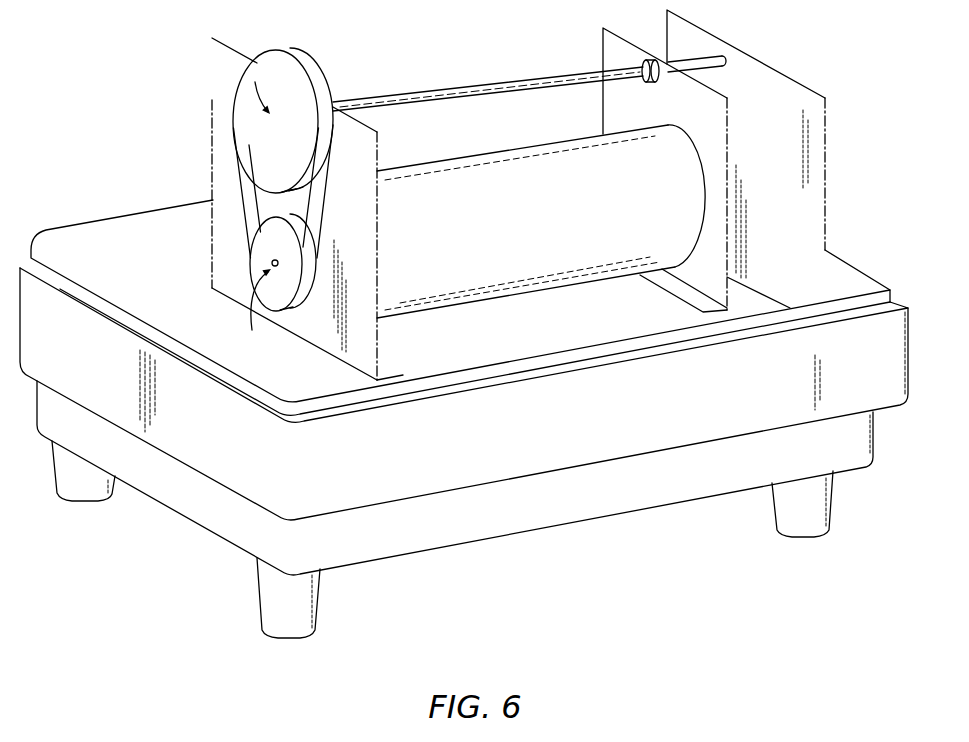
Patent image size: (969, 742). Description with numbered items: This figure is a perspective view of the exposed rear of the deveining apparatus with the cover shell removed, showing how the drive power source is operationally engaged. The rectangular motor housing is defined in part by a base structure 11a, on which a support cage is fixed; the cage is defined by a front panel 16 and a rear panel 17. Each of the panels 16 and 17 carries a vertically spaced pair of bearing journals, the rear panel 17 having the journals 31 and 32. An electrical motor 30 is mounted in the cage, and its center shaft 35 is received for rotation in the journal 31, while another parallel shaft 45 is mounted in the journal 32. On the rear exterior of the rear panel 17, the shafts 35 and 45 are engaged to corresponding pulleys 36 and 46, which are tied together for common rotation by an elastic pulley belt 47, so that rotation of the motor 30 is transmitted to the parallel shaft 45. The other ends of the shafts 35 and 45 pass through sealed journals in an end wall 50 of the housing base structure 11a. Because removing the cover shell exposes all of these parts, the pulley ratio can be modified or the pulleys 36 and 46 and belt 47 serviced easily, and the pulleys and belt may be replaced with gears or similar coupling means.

The base structure 11a is at (590, 497).
The front panel 16 is at (598, 55).
The rear panel 17 is at (212, 182).
The electrical motor 30 is at (547, 280).
The bearing journal 31 is at (244, 311).
The bearing journal 32 is at (257, 50).
The center shaft 35 is at (283, 263).
The pulley 36 is at (255, 270).
The parallel shaft 45 is at (435, 92).
The pulley 46 is at (235, 125).
The elastic pulley belt 47 is at (323, 178).
The end wall 50 is at (825, 108).